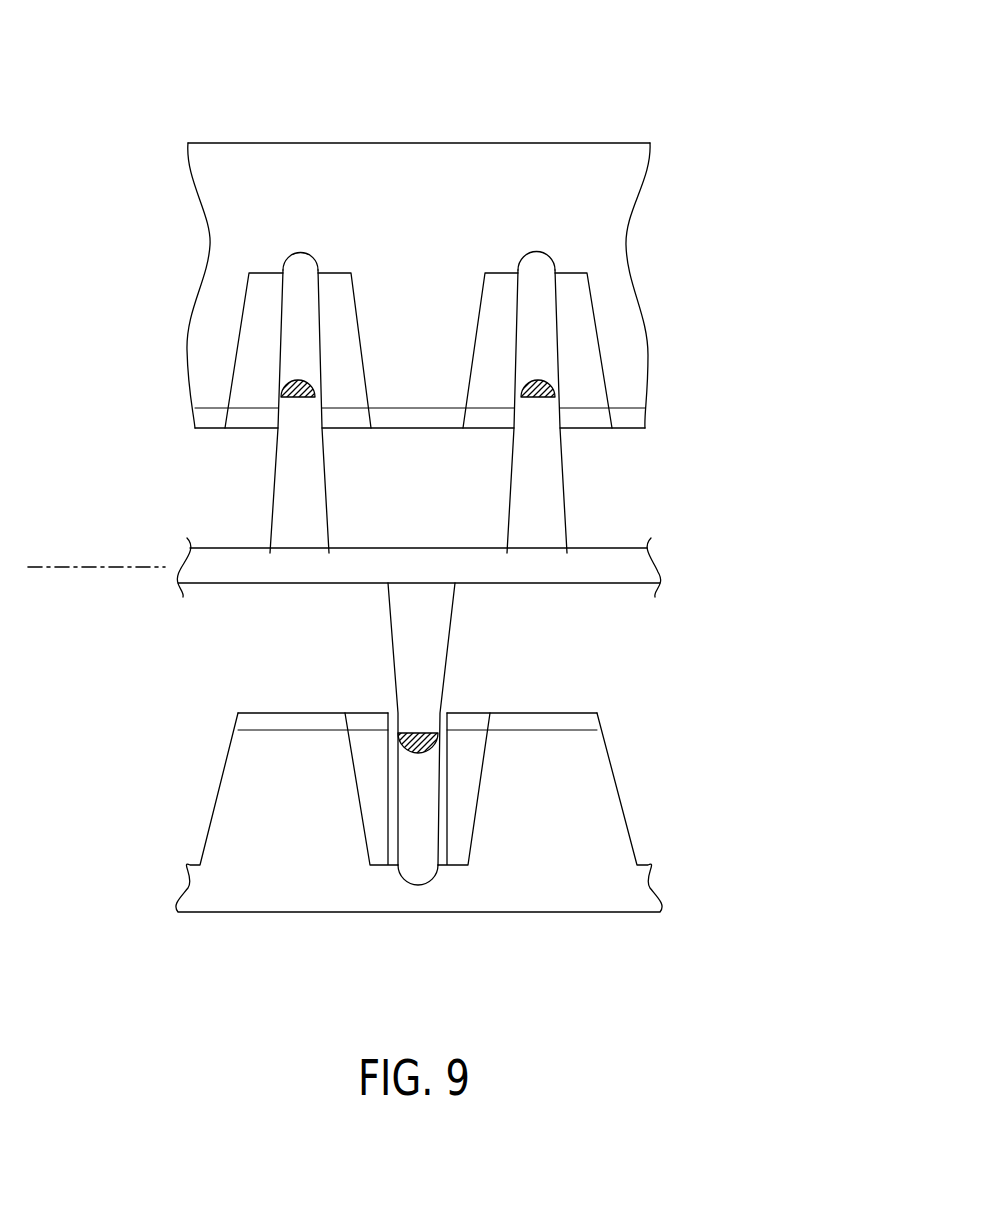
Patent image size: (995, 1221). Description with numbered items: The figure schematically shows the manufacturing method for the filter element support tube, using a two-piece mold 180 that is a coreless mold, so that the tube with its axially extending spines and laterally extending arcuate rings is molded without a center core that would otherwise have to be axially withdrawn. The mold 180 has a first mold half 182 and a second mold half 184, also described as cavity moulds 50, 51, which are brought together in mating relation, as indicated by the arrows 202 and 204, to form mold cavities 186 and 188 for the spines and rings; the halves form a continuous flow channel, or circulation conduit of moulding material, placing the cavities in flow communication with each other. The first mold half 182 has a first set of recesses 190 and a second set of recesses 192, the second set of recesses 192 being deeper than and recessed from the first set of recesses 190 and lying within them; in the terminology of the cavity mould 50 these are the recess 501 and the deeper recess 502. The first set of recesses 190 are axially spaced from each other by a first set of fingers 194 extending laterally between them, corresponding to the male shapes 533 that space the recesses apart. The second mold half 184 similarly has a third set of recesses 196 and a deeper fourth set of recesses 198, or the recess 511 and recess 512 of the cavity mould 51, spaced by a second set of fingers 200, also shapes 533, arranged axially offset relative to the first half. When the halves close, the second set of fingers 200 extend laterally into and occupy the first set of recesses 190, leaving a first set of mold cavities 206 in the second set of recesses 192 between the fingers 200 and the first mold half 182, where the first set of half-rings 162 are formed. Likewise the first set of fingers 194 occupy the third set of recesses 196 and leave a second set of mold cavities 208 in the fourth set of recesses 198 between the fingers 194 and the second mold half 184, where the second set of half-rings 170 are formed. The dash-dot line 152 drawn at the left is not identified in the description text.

The two-piece mold 180 is at (123, 73).
The first mold half 182 is at (449, 261).
The cavity mould 50 is at (598, 156).
The first set of mold cavities 206 is at (297, 265).
The second set of recesses 192 is at (349, 366).
The recess 502 is at (349, 366).
The first set of recesses 190 is at (418, 325).
The recess 501 is at (330, 280).
The mold cavity 188 is at (569, 272).
The first set of half-rings 162 is at (537, 384).
The first set of fingers 194 is at (356, 437).
The male shapes 533 is at (205, 387).
The mold cavity 186 is at (623, 417).
The arrow 202 is at (719, 398).
The centerline 152 is at (95, 570).
The second set of fingers 200 is at (292, 747).
The arrow 204 is at (719, 673).
The second set of half-rings 170 is at (415, 757).
The second set of mold cavities 208 is at (408, 872).
The fourth set of recesses 198 is at (367, 916).
The recess 512 is at (367, 916).
The third set of recesses 196 is at (422, 778).
The recess 511 is at (422, 778).
The second mold half 184 is at (430, 853).
The cavity mould 51 is at (597, 897).